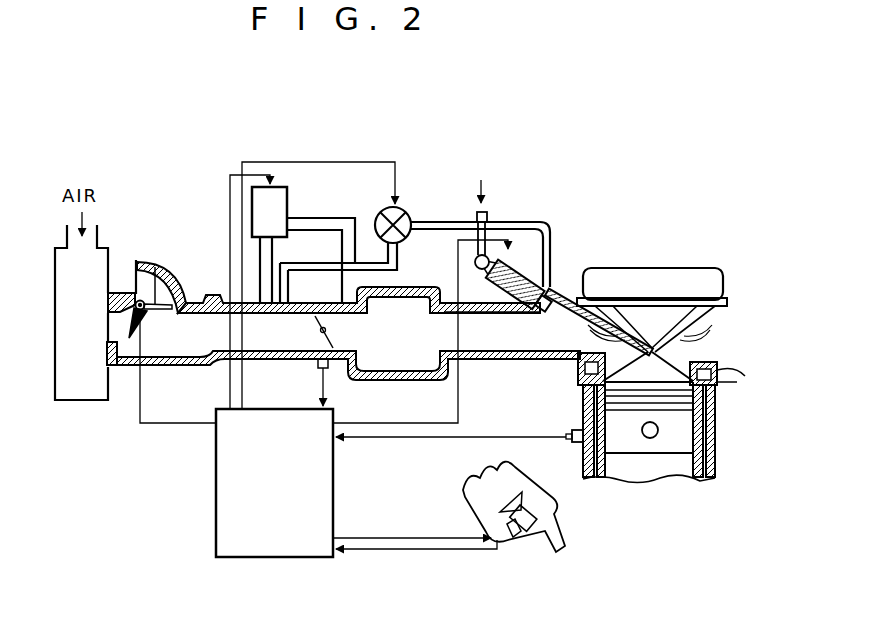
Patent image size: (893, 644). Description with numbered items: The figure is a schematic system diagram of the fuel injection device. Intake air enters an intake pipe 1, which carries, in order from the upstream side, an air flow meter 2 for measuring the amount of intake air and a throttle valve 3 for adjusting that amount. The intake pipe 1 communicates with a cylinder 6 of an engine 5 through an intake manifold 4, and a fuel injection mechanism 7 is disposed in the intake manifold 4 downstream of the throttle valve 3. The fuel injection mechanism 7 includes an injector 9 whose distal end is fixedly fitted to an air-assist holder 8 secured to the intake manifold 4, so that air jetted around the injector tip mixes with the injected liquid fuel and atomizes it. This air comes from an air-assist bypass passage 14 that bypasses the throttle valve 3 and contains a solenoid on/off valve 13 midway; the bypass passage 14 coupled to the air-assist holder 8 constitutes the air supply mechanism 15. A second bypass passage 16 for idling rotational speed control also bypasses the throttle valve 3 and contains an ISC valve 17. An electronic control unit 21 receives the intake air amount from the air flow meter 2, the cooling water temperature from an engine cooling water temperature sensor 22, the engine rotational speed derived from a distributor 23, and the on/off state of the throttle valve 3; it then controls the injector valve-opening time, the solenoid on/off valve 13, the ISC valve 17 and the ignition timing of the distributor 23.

The intake pipe 1 is at (245, 300).
The air flow meter 2 is at (156, 266).
The throttle valve 3 is at (317, 318).
The intake manifold 4 is at (545, 361).
The engine 5 is at (715, 264).
The cylinder 6 is at (683, 380).
The fuel injection mechanism 7 is at (529, 271).
The air-assist holder 8 is at (523, 318).
The injector 9 is at (557, 284).
The solenoid on/off valve 13 is at (410, 204).
The air-assist bypass passage 14 is at (503, 222).
The air supply mechanism 15 is at (664, 261).
The bypass passage 16 is at (334, 217).
The ISC valve 17 is at (282, 186).
The electronic control unit 21 is at (297, 500).
The engine cooling water temperature sensor 22 is at (573, 444).
The distributor 23 is at (515, 542).